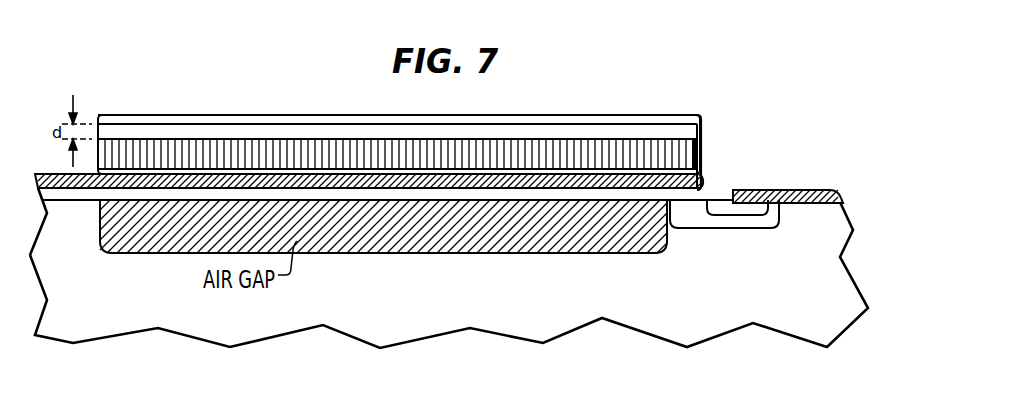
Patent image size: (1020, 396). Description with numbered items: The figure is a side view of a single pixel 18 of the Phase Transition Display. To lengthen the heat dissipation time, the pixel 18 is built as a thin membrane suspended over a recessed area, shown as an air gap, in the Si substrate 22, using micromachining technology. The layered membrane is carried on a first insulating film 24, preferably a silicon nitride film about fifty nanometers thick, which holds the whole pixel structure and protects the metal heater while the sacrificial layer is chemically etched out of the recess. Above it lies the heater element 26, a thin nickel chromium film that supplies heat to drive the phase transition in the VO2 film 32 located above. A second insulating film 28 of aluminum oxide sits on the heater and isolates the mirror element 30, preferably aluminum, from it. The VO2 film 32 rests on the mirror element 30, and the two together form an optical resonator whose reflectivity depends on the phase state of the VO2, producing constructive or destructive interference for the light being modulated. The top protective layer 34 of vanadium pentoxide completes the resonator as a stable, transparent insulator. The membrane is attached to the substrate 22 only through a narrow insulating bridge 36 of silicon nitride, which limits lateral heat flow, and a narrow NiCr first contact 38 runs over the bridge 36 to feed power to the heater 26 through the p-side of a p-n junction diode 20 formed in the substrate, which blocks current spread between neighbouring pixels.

The pixel 18 is at (88, 84).
The diode 20 is at (776, 226).
The Si substrate 22 is at (656, 318).
The first insulating film 24 is at (629, 196).
The heater element 26 is at (700, 189).
The second insulating film 28 is at (701, 178).
The mirror element 30 is at (701, 150).
The VO2 film 32 is at (675, 128).
The protective layer 34 is at (157, 115).
The bridge 36 is at (814, 190).
The first contact 38 is at (72, 188).